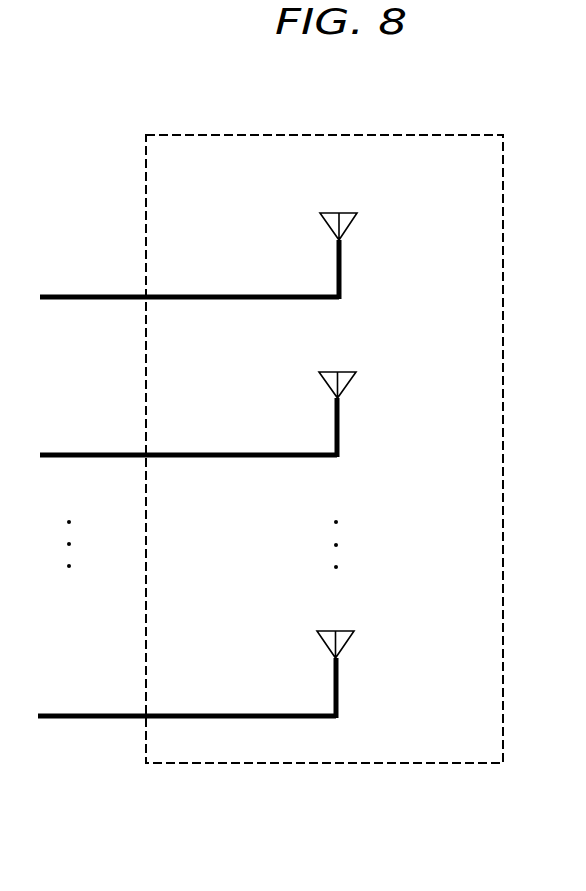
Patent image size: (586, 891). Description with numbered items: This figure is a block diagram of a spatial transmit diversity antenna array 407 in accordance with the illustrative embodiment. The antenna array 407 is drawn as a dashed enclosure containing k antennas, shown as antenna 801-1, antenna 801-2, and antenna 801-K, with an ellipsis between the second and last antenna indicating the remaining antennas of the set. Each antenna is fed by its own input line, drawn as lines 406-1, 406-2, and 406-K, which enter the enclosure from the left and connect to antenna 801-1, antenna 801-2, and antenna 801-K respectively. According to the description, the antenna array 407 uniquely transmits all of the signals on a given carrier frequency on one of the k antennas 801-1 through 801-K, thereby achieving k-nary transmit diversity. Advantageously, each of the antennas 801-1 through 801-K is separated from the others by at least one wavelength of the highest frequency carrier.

The antenna array 407 is at (225, 134).
The antenna feed line 1 406-1 is at (64, 296).
The antenna feed line 2 406-2 is at (63, 454).
The antenna feed line K 406-K is at (61, 714).
The antenna 801-1 is at (341, 251).
The antenna 801-2 is at (340, 410).
The antenna 801-K is at (339, 668).